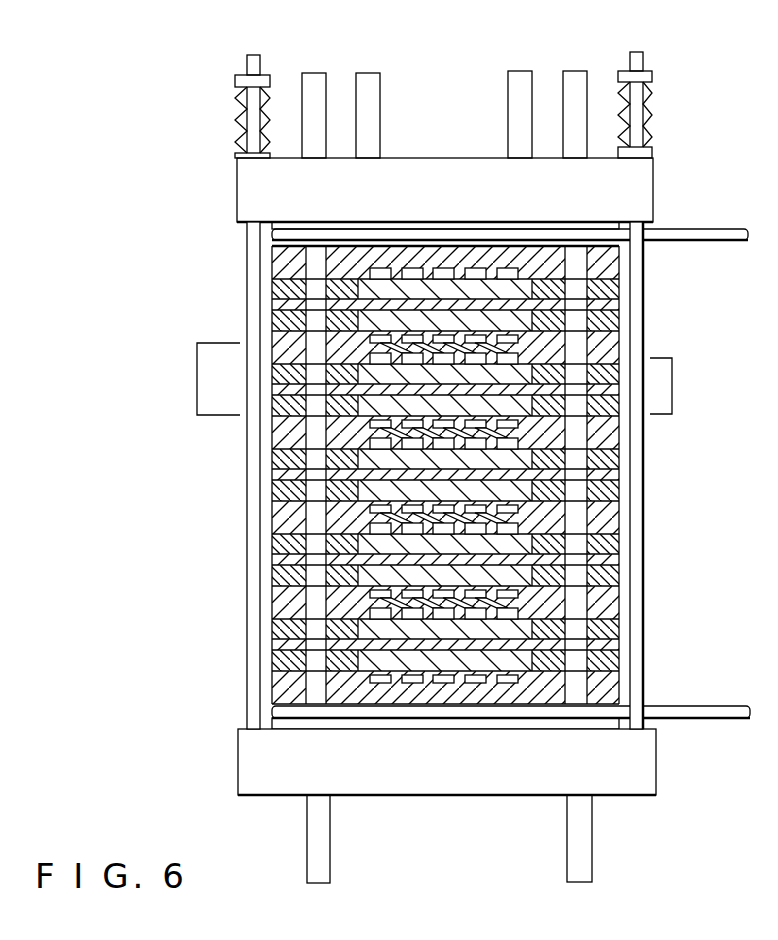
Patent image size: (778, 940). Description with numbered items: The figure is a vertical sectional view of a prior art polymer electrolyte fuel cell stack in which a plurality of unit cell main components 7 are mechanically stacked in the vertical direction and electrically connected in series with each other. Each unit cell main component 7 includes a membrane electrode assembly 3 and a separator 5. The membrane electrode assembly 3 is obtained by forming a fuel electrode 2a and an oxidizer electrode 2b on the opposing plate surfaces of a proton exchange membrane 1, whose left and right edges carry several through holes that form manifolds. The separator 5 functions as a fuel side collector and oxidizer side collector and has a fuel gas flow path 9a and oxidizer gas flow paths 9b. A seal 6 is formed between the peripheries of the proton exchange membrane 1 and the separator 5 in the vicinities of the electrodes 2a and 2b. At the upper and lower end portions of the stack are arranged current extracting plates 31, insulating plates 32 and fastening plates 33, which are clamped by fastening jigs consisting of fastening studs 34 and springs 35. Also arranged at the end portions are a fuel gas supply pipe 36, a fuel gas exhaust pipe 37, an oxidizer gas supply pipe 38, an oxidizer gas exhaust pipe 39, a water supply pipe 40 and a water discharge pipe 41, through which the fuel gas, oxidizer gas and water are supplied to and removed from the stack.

The proton exchange membrane 1 is at (288, 300).
The fuel electrode 2a is at (373, 320).
The oxidizer electrode 2b is at (378, 288).
The membrane electrode assembly 3 is at (671, 386).
The separator 5 is at (342, 347).
The seal 6 is at (335, 418).
The unit cell main component 7 is at (208, 379).
The fuel gas flow path 9a is at (520, 427).
The oxidizer gas flow path 9b is at (520, 343).
The current extracting plate 31 is at (670, 235).
The insulating plate 32 is at (578, 223).
The fastening plate 33 is at (272, 202).
The fastening stud 34 is at (637, 537).
The spring 35 is at (237, 125).
The fuel gas supply pipe 36 is at (370, 80).
The fuel gas exhaust pipe 37 is at (522, 80).
The oxidizer gas supply pipe 38 is at (315, 80).
The oxidizer gas exhaust pipe 39 is at (575, 80).
The water supply pipe 40 is at (305, 852).
The water discharge pipe 41 is at (573, 848).